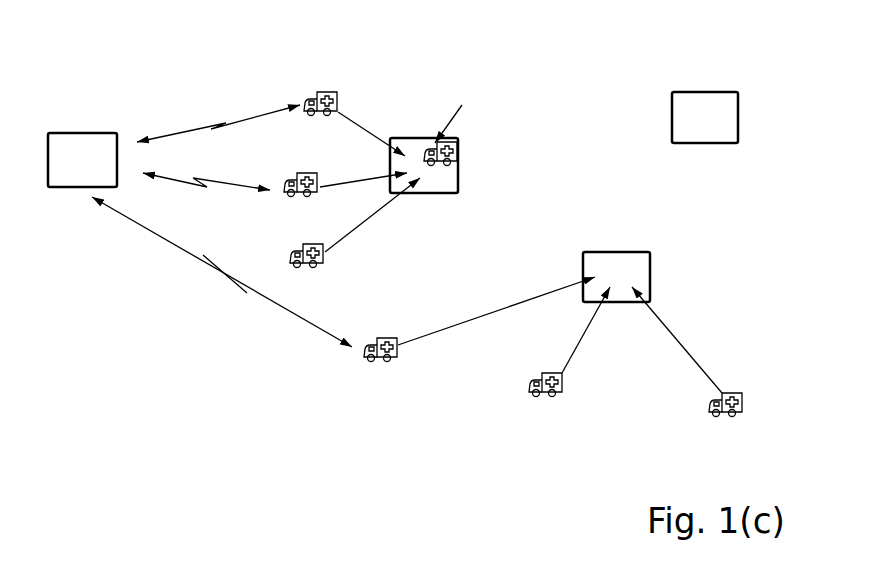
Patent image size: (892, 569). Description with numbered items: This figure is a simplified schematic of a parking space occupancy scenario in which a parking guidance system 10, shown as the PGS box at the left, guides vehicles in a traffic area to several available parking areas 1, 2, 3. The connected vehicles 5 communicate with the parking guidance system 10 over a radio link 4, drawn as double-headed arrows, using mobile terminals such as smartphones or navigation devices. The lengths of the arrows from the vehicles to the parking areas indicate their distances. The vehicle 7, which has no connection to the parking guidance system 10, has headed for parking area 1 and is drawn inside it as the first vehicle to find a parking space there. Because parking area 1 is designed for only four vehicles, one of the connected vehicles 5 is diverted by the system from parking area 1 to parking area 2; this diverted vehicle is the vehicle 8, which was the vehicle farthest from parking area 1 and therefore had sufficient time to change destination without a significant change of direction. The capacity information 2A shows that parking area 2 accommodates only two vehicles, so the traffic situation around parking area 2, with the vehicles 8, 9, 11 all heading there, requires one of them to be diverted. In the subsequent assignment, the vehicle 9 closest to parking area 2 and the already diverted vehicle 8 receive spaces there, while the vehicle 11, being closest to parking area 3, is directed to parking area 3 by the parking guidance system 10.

The parking area 1 is at (418, 138).
The parking area 2 is at (637, 252).
The capacity information 2A is at (780, 300).
The parking area 3 is at (705, 92).
The radio link 4 is at (245, 118).
The vehicles 5 is at (330, 91).
The vehicle 7 is at (458, 153).
The vehicle 8 is at (377, 366).
The vehicle 9 is at (545, 400).
The parking guidance system 10 is at (92, 132).
The vehicle 11 is at (725, 421).